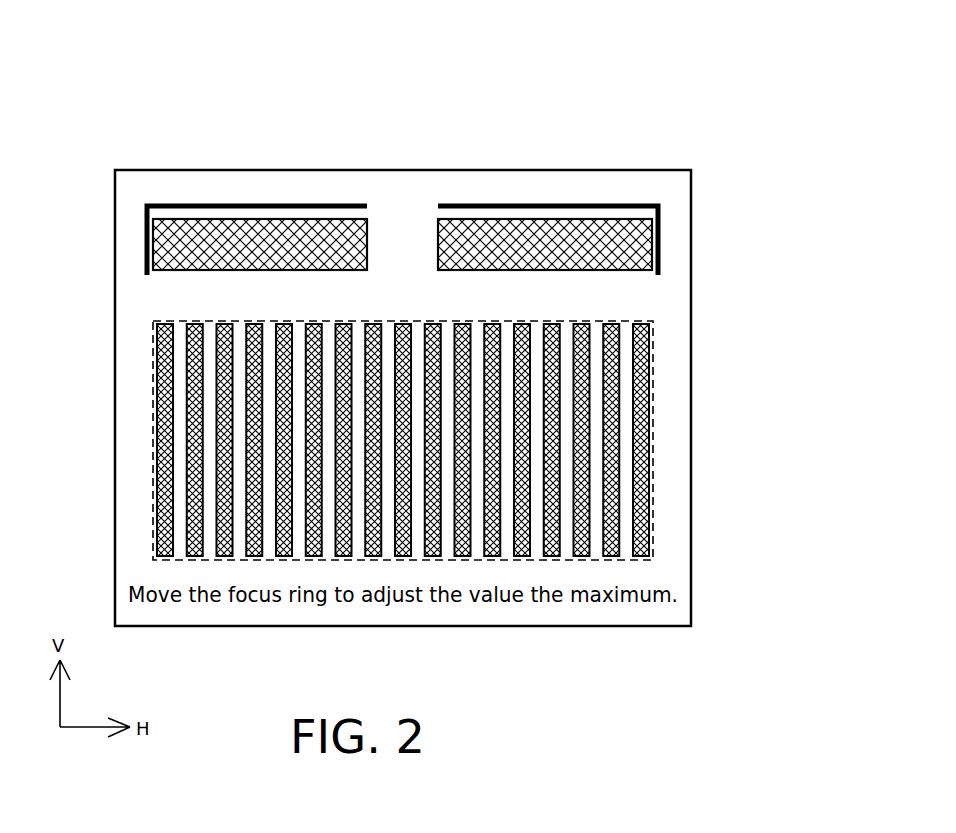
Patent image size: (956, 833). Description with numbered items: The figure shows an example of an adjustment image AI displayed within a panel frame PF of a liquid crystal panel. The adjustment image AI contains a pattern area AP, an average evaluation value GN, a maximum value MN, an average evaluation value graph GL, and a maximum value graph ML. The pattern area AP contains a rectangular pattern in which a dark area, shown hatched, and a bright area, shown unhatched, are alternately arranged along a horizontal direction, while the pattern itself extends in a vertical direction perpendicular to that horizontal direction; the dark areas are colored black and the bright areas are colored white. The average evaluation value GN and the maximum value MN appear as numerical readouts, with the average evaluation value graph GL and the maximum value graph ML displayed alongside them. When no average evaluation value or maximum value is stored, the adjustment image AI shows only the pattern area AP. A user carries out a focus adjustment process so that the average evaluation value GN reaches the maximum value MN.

The adjustment image AI is at (703, 78).
The maximum value graph ML is at (187, 205).
The average evaluation value graph GL is at (187, 271).
The maximum value MN is at (403, 190).
The average evaluation value GN is at (403, 268).
The pattern area AP is at (653, 362).
The panel frame PF is at (114, 496).